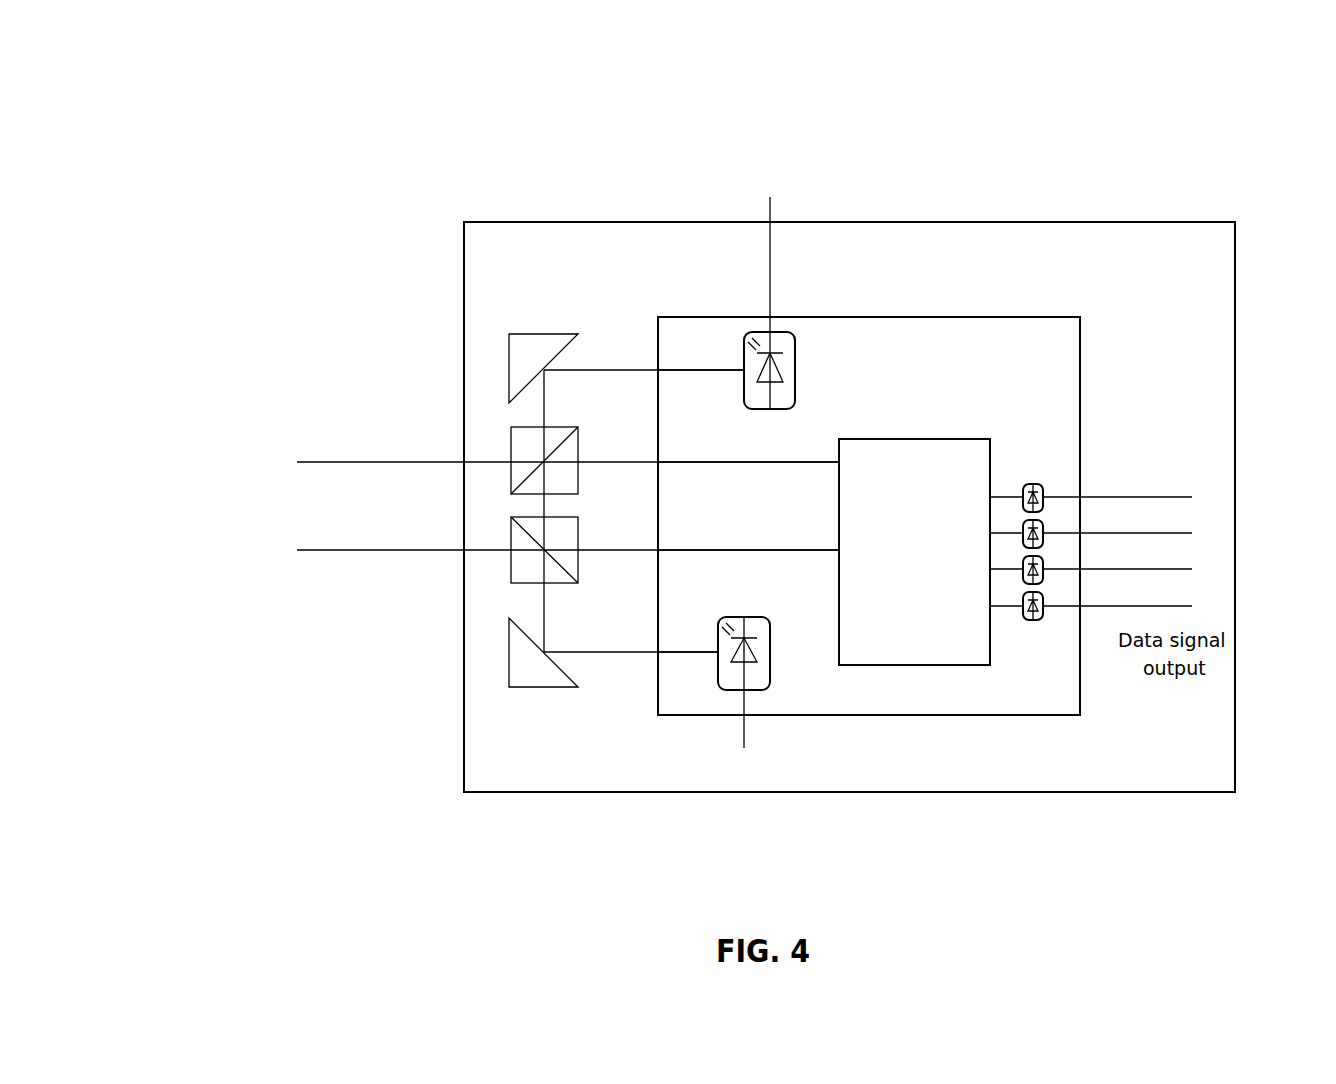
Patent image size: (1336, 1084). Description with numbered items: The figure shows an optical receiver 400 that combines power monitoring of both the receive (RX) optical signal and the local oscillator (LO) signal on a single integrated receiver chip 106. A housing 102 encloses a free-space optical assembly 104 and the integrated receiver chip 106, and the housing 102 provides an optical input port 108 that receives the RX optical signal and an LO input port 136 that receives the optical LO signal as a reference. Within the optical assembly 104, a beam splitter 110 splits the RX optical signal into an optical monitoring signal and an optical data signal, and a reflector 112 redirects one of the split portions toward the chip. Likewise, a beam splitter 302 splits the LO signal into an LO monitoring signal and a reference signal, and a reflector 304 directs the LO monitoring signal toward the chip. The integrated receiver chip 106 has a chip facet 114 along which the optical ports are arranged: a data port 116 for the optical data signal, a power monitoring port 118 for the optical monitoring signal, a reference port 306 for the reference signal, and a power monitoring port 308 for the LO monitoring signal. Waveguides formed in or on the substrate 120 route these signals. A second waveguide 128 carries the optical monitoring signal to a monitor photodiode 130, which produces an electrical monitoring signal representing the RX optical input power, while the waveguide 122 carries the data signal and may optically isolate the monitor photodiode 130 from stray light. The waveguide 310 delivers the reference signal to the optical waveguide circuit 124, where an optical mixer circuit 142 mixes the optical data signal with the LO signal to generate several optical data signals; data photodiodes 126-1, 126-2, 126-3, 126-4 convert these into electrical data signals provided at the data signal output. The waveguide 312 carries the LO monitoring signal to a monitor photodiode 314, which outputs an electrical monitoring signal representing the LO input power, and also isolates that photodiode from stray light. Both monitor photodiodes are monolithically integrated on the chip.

The optical receiver 400 is at (282, 68).
The housing 102 is at (920, 222).
The optical assembly 104 is at (540, 283).
The integrated receiver chip 106 is at (1080, 317).
The optical input port 108 is at (462, 467).
The beam splitter 110 is at (511, 452).
The reflector 112 is at (509, 352).
The chip facet 114 is at (970, 316).
The data port 116 is at (656, 368).
The power monitoring port 118 is at (655, 461).
The substrate 120 is at (993, 702).
The waveguide 122 is at (688, 461).
The optical waveguide circuit 124 is at (937, 372).
The data photodiode 126-1 is at (1040, 484).
The data photodiode 126-2 is at (1040, 520).
The data photodiode 126-3 is at (1040, 556).
The data photodiode 126-4 is at (1040, 592).
The second waveguide 128 is at (688, 369).
The monitor photodiode 130 is at (797, 366).
The LO input port 136 is at (462, 555).
The optical mixer circuit 142 is at (937, 439).
The beam splitter 302 is at (511, 535).
The reflector 304 is at (509, 648).
The reference port 306 is at (656, 552).
The power monitoring port 308 is at (656, 652).
The waveguide 310 is at (688, 549).
The waveguide 312 is at (680, 651).
The monitor photodiode 314 is at (771, 650).